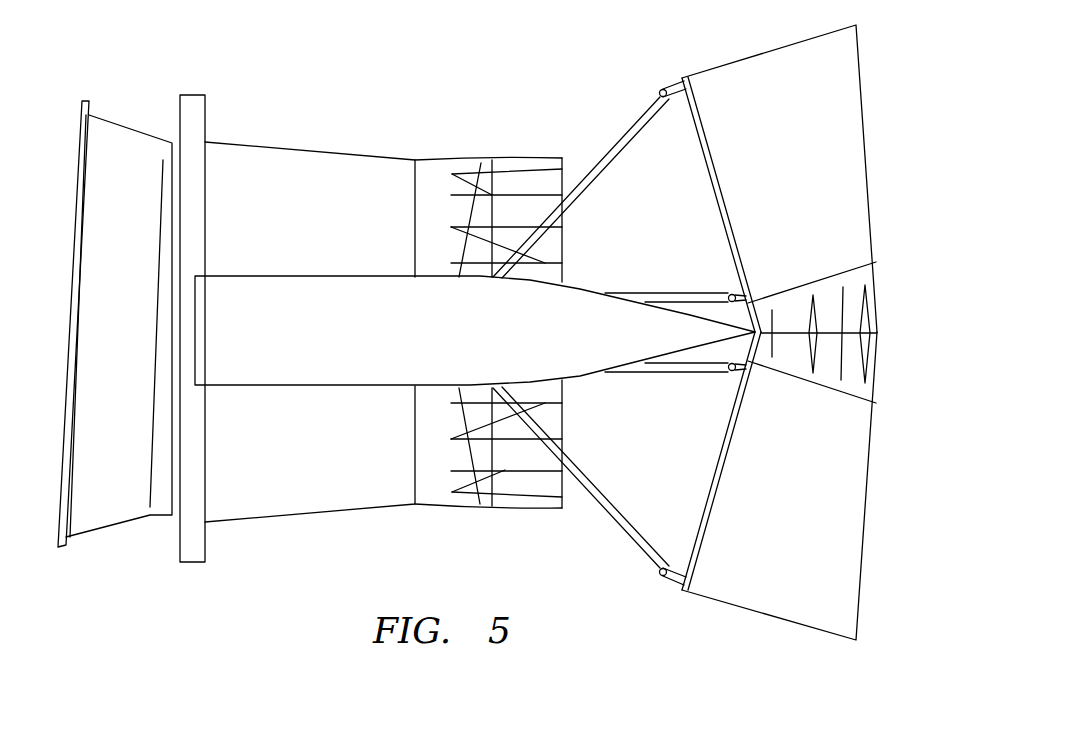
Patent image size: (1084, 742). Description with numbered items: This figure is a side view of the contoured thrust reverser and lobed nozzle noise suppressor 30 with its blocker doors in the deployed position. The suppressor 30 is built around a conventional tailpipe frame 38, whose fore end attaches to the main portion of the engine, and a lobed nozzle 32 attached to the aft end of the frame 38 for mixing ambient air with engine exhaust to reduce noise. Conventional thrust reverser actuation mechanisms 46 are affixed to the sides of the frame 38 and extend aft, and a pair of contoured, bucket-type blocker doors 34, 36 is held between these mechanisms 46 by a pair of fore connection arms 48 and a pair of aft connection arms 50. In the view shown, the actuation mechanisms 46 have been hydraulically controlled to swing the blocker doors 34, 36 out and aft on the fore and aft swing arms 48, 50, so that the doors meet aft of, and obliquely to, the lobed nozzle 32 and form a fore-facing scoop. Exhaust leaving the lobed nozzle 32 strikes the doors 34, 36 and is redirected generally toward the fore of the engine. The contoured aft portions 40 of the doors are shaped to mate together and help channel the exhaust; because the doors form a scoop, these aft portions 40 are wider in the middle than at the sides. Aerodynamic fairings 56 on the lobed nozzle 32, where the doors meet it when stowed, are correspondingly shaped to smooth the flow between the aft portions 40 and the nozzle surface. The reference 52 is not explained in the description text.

The contoured thrust reverser and lobed nozzle noise suppressor 30 is at (125, 577).
The lobed nozzle 32 is at (524, 135).
The contoured blocker door 34 is at (843, 153).
The contoured blocker door 36 is at (847, 519).
The tailpipe frame 38 is at (288, 163).
The contoured aft portions 40 is at (865, 348).
The thrust reverser actuation mechanisms 46 is at (297, 294).
The fore connection arms 48 is at (616, 146).
The aft connection arms 50 is at (679, 298).
The exhaust duct 52 is at (553, 275).
The aerodynamic fairings 56 is at (480, 181).